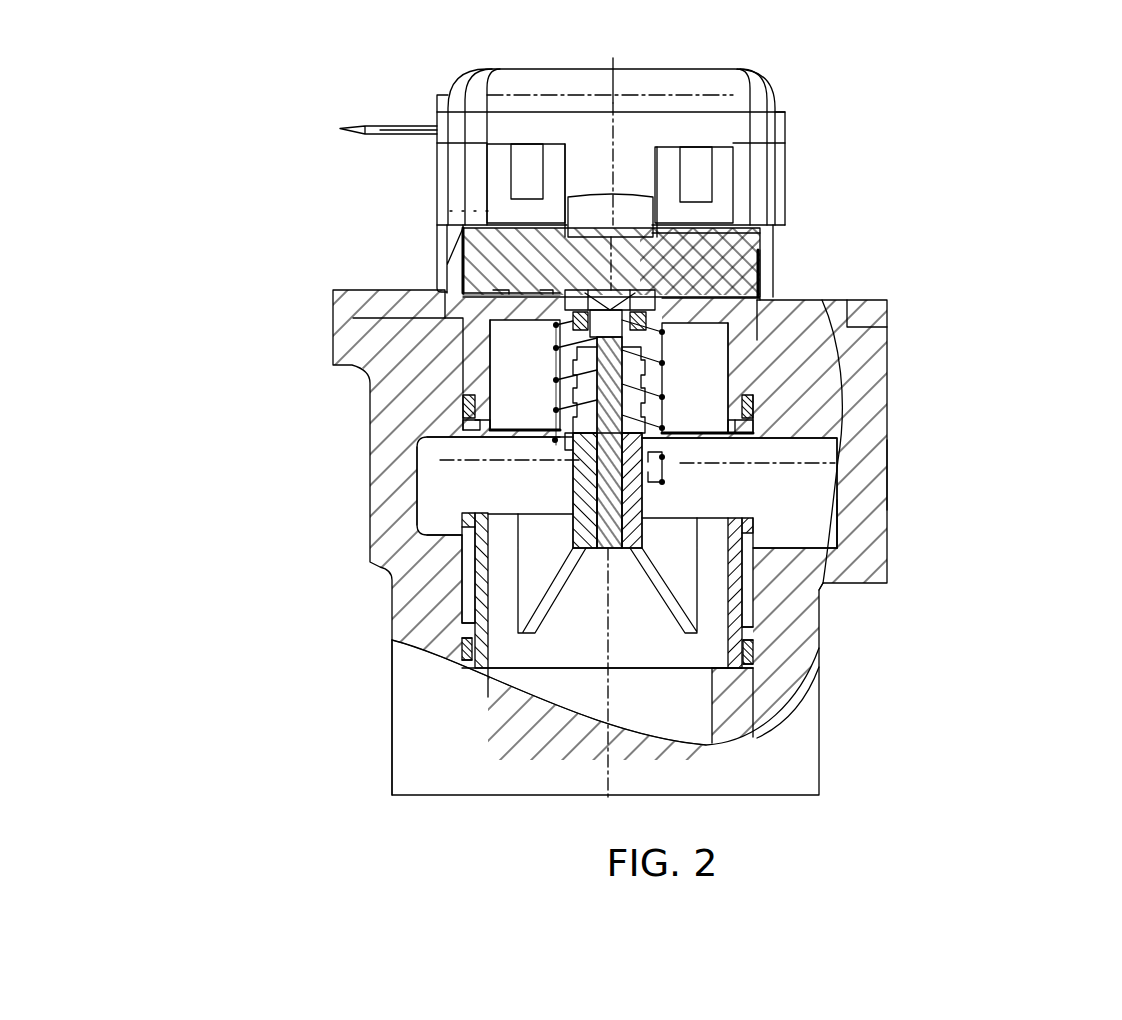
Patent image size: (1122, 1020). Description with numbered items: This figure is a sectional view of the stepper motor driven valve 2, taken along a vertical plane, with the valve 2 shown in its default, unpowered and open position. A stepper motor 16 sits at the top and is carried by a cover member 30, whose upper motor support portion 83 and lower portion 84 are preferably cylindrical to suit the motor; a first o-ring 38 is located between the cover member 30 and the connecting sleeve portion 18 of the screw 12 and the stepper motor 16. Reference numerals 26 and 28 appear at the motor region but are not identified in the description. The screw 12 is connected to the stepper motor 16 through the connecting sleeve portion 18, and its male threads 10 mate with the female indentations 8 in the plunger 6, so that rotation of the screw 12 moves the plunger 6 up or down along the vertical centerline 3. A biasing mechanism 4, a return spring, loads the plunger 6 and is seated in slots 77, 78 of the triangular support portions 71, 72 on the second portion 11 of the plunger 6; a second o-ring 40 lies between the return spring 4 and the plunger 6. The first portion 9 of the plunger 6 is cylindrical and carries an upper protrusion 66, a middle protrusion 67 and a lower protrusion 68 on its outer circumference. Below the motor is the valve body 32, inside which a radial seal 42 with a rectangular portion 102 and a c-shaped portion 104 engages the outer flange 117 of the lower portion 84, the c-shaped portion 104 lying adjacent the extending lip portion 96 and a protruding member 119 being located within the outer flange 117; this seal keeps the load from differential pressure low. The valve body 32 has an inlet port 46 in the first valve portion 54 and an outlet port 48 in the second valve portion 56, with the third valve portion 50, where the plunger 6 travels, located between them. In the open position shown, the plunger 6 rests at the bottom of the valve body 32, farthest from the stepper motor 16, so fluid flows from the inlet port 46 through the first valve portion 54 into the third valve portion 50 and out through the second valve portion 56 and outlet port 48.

The valve 2 is at (617, 448).
The vertical axis or centerline 3 is at (608, 795).
The biasing mechanism 4 is at (770, 388).
The plunger 6 is at (568, 492).
The outlet passage 8 is at (675, 478).
The first portion 9 is at (474, 577).
The male threads 10 is at (722, 330).
The second portion 11 is at (823, 586).
The screw 12 is at (470, 392).
The stepper motor 16 is at (723, 233).
The connecting sleeve portion 18 is at (722, 262).
The actuator motor 26 is at (611, 180).
The electrical terminal 28 is at (387, 130).
The cover member 30 is at (712, 305).
The valve body 32 is at (403, 705).
The first o-ring 38 is at (648, 320).
The second o-ring 40 is at (395, 632).
The radial seal 42 is at (763, 421).
The inlet port 46 is at (902, 475).
The outlet port 48 is at (555, 714).
The third valve portion 50 is at (576, 622).
The first valve portion 54 is at (771, 530).
The second valve portion 56 is at (639, 707).
The first, upper protrusion 66 is at (753, 546).
The second, middle protrusion 67 is at (753, 638).
The third, lower protrusion 68 is at (753, 664).
The triangular support portion 71 is at (525, 543).
The triangular support portion 72 is at (650, 545).
The slot 77 is at (557, 475).
The slot 78 is at (790, 490).
The upper motor support portion 83 is at (762, 255).
The lower portion 84 is at (766, 366).
The extending lip portion 96 is at (738, 420).
The rectangular portion 102 is at (755, 411).
The c-shaped portion 104 is at (757, 437).
The outer flange 117 is at (737, 355).
The protruding member 119 is at (565, 362).